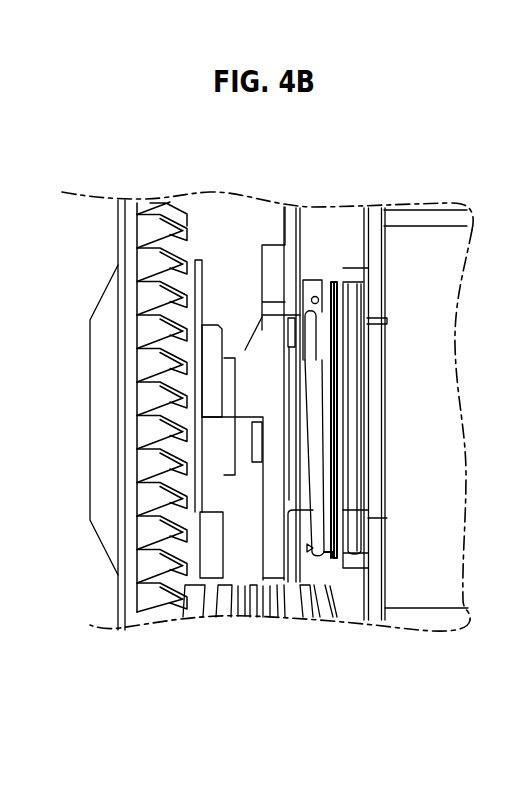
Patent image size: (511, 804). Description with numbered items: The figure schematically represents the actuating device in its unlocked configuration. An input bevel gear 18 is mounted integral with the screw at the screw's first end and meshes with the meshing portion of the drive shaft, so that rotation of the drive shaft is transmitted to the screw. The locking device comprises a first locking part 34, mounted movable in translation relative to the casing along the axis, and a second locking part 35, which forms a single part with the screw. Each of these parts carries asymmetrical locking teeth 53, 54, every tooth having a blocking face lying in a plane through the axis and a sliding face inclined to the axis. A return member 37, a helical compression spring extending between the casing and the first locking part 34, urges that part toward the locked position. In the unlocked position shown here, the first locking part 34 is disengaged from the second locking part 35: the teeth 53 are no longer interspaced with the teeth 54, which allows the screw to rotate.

The input bevel gear 18 is at (128, 218).
The second locking part 35 is at (193, 278).
The locking teeth of the first locking part 53 is at (204, 452).
The locking teeth of the second locking part 54 is at (257, 368).
The return member 37 is at (348, 342).
The first locking part 34 is at (273, 552).